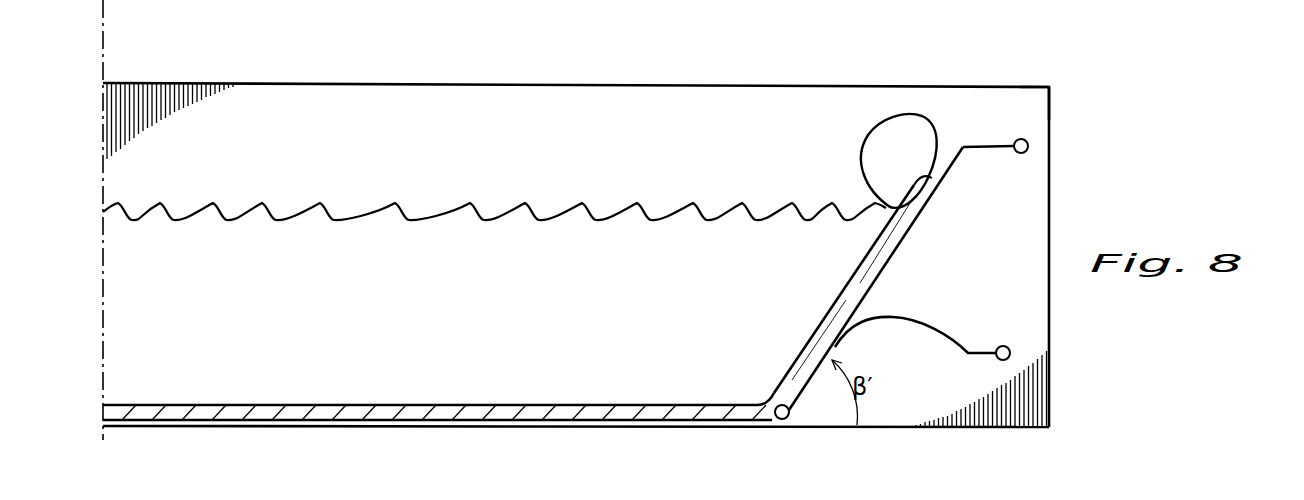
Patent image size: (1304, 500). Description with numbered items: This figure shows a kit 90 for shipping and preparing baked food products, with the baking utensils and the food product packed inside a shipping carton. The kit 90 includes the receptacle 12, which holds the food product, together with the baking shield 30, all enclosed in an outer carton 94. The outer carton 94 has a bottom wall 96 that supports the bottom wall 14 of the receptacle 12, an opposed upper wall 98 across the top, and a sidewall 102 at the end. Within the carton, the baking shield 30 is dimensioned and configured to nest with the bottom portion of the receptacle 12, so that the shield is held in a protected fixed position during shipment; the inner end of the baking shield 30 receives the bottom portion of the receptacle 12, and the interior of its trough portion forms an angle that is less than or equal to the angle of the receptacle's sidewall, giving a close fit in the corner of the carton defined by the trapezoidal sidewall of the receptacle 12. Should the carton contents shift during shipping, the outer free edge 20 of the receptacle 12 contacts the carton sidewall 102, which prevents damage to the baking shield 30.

The receptacle 12 is at (878, 270).
The bottom 14 is at (466, 425).
The outer free edge 20 is at (1016, 141).
The baking shield 30 is at (957, 335).
The kit 90 is at (1028, 82).
The outer carton 94 is at (1055, 165).
The bottom wall 96 is at (863, 427).
The upper wall 98 is at (639, 83).
The sidewall 102 is at (1050, 327).